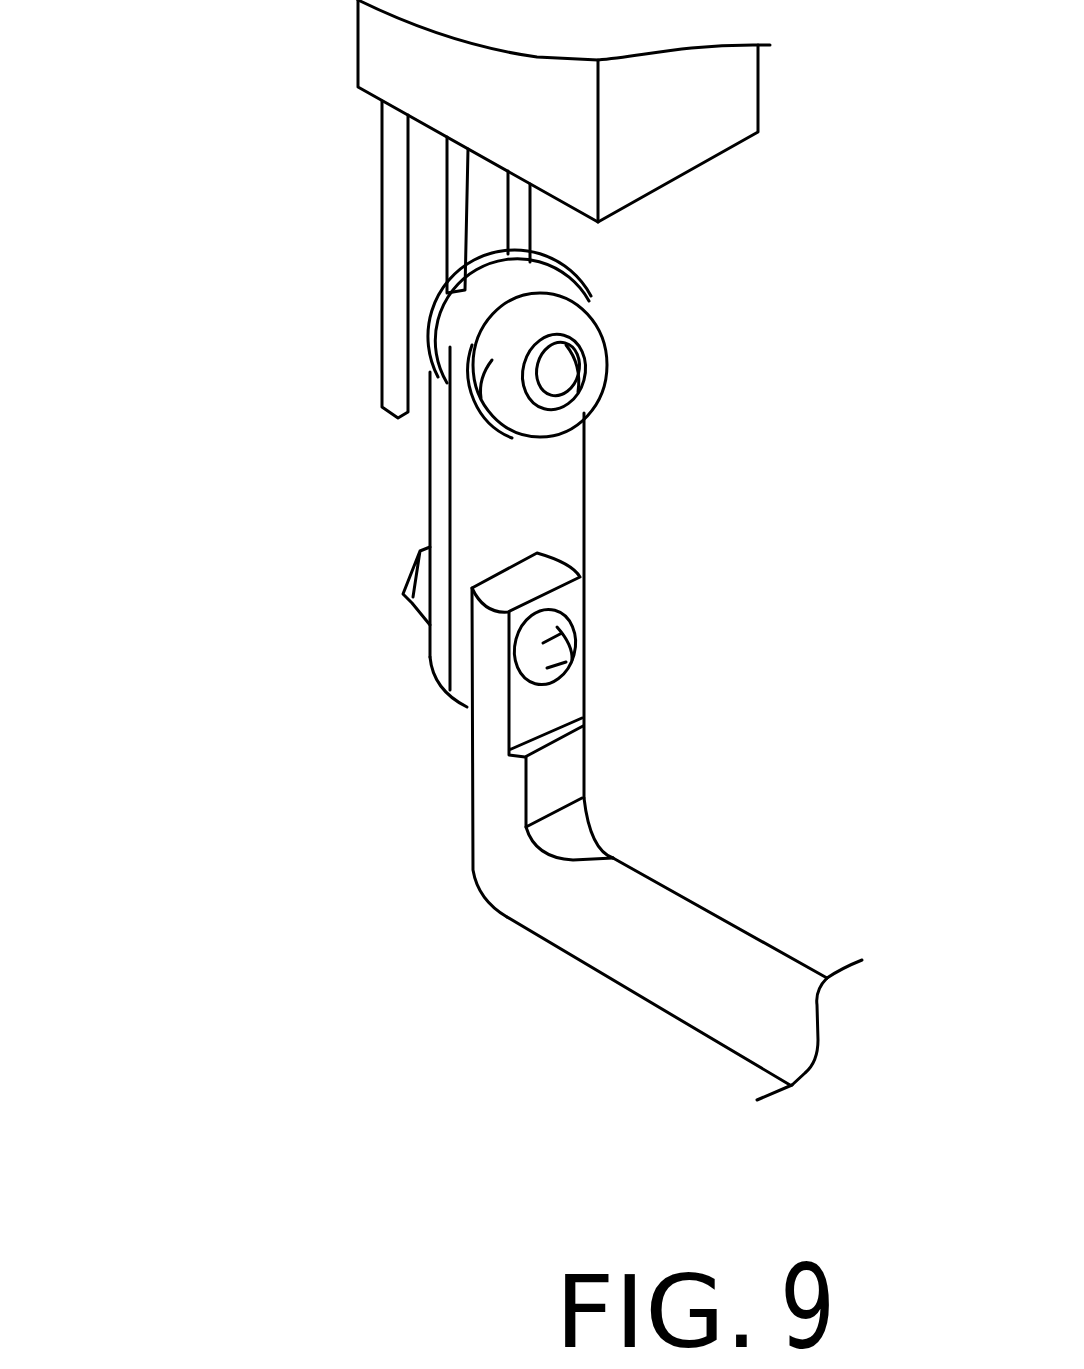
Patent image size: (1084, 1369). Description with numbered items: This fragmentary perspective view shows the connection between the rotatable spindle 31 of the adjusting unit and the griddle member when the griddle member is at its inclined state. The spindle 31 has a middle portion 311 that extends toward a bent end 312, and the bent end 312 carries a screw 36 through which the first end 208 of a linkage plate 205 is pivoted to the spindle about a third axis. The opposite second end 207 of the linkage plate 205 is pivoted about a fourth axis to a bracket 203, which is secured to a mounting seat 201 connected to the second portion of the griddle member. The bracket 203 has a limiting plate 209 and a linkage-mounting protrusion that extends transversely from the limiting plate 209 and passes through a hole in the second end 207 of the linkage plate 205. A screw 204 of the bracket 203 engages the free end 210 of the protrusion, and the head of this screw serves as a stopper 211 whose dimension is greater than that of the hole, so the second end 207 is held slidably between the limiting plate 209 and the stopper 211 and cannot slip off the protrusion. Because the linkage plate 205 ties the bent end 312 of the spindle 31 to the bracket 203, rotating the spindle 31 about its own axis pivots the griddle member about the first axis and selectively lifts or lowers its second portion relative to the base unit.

The mounting seat 201 is at (690, 133).
The bracket 203 is at (311, 262).
The limiting plate 209 is at (405, 338).
The screw 204 is at (495, 454).
The second end 207 is at (472, 345).
The free end 210 is at (488, 380).
The stopper 211 is at (600, 356).
The linkage plate 205 is at (576, 572).
The first end 208 is at (458, 658).
The rotatable spindle 31 is at (607, 859).
The screw 36 is at (550, 640).
The bent end 312 is at (530, 715).
The middle portion 311 is at (657, 958).